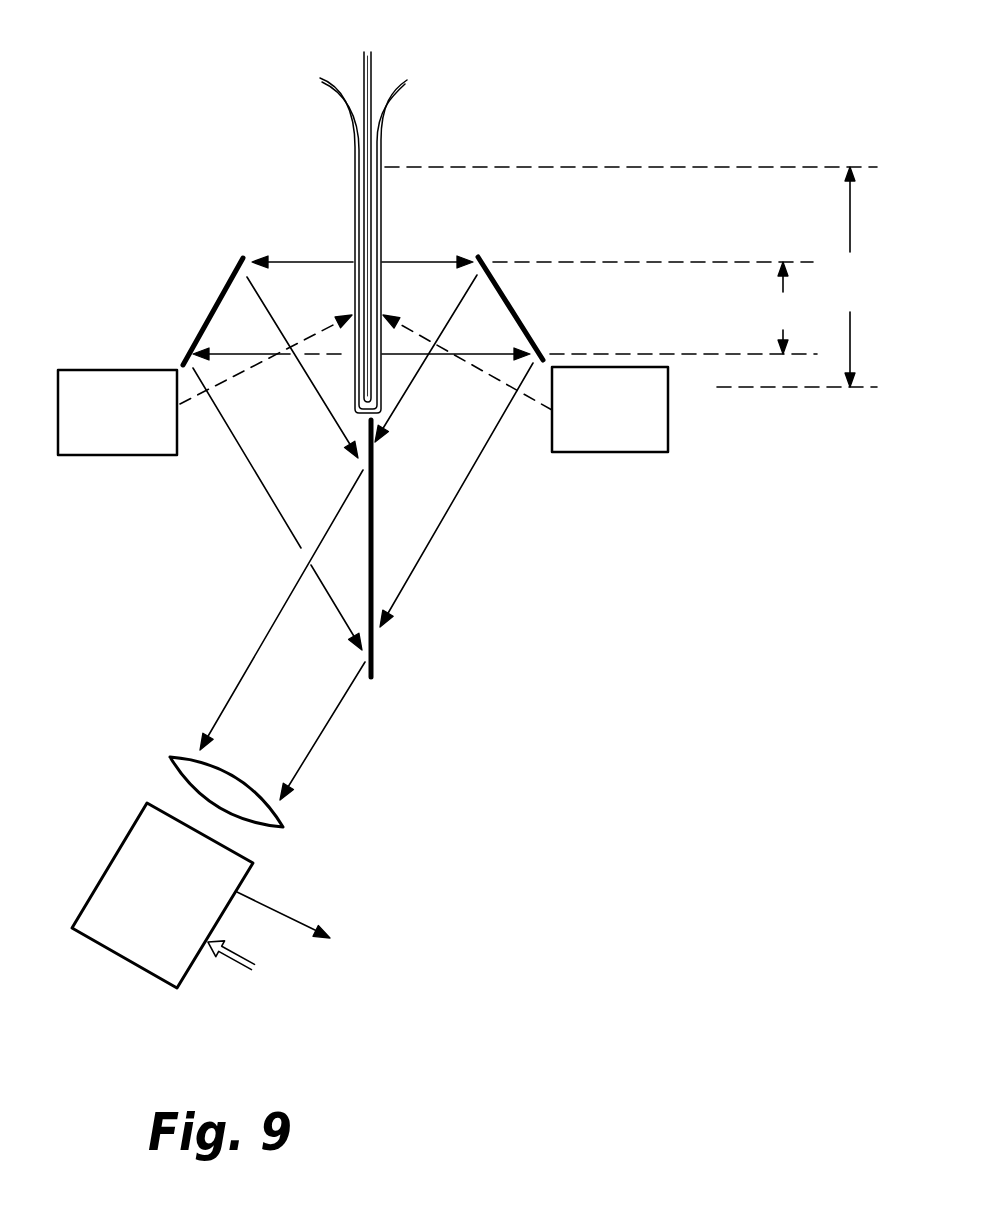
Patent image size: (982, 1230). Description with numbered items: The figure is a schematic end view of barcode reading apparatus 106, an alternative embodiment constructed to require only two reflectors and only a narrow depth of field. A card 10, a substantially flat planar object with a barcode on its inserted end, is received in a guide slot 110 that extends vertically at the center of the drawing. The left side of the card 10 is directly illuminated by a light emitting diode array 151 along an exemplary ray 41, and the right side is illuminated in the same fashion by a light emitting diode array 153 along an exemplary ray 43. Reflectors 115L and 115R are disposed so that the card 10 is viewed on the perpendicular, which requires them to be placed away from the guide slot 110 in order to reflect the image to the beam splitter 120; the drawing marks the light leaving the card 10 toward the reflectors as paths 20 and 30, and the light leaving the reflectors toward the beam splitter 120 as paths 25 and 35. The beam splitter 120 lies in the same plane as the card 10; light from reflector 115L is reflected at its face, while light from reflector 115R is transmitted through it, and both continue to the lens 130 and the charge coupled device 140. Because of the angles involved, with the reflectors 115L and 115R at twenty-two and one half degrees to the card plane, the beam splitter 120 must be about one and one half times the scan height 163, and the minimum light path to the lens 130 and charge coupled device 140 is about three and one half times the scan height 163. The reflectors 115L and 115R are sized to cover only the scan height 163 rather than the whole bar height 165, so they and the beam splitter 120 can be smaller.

The card 10 is at (372, 60).
The guide slot 110 is at (350, 110).
The barcode reading apparatus 106 is at (570, 112).
The left light path 20 is at (303, 262).
The right light path 30 is at (450, 220).
The first reflector 115L is at (216, 300).
The reflector 115R is at (520, 318).
The left reflected light path 25 is at (250, 320).
The right reflected light path 35 is at (497, 326).
The exemplary ray 41 is at (331, 288).
The exemplary ray 43 is at (437, 288).
The light emitting diode array 151 is at (92, 325).
The light emitting diode array 153 is at (669, 378).
The scan height 163 is at (655, 308).
The bar height 165 is at (632, 277).
The beam splitter 120 is at (376, 680).
The lens 130 is at (175, 760).
The charge coupled device 140 is at (125, 832).